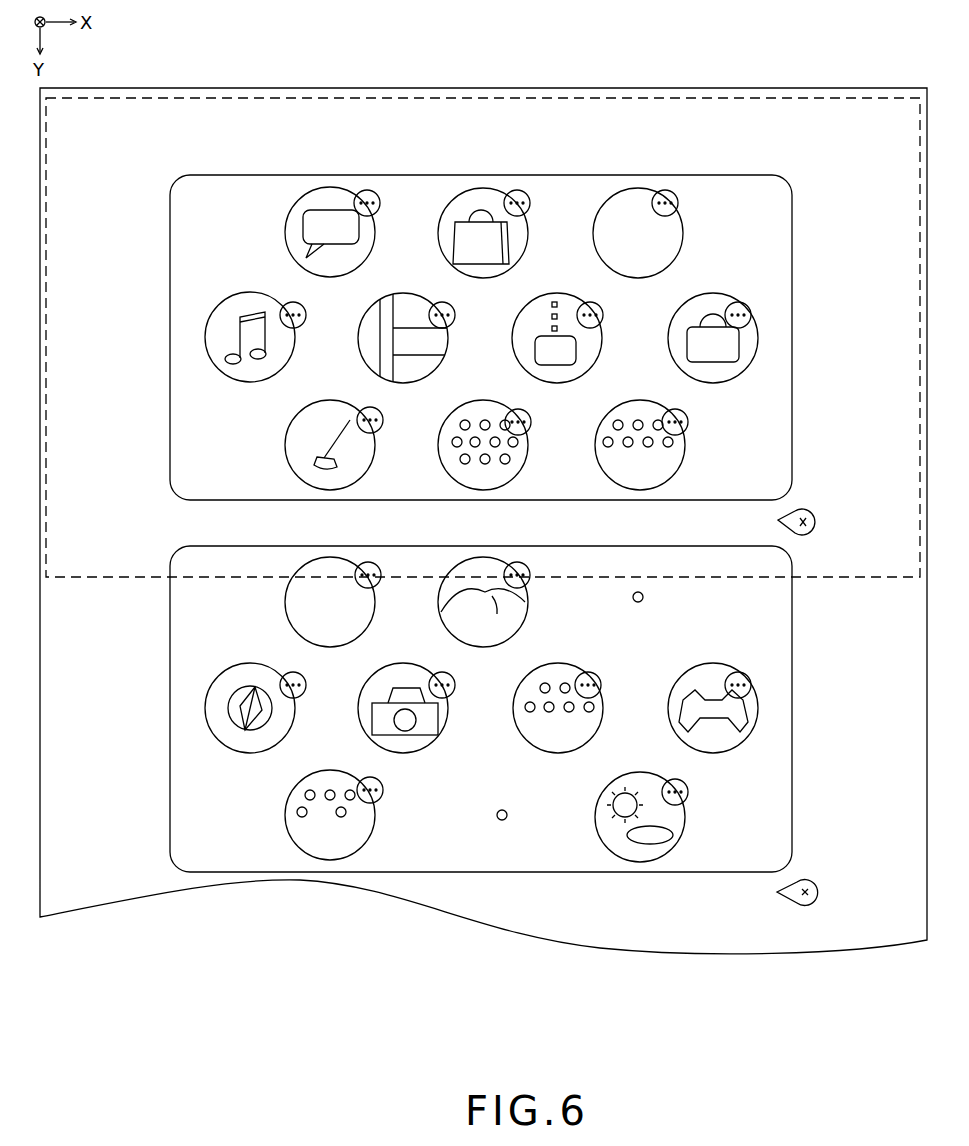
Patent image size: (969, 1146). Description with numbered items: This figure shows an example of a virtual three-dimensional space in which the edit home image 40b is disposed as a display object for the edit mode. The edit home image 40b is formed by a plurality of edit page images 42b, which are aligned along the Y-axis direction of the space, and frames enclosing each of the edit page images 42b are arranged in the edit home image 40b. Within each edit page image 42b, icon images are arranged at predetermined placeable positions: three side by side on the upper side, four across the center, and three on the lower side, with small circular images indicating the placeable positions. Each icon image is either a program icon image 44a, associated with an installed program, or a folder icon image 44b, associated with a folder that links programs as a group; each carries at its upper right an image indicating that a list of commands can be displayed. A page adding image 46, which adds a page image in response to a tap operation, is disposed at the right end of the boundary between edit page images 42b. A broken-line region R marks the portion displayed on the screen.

The edit home image 40b is at (762, 88).
The edit page image 42b is at (782, 330).
The program icon image 44a is at (372, 243).
The folder icon image 44b is at (525, 456).
The page adding image 46 is at (812, 506).